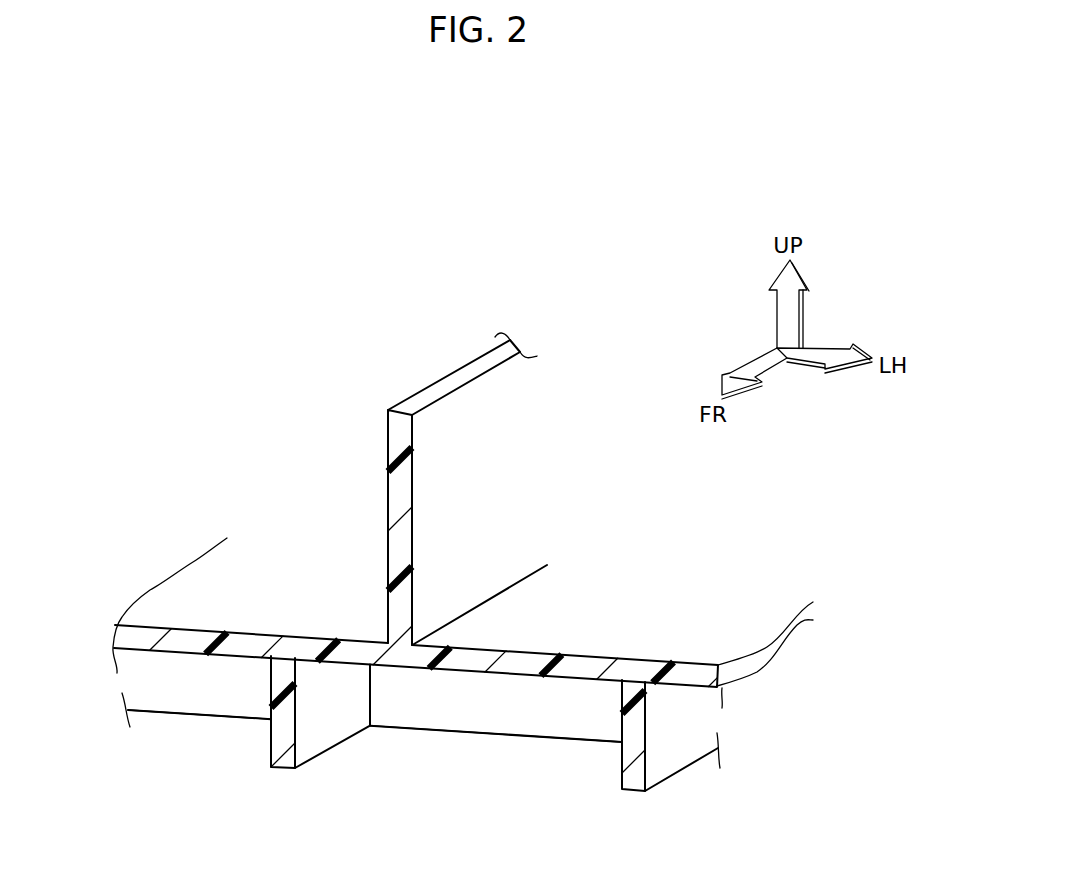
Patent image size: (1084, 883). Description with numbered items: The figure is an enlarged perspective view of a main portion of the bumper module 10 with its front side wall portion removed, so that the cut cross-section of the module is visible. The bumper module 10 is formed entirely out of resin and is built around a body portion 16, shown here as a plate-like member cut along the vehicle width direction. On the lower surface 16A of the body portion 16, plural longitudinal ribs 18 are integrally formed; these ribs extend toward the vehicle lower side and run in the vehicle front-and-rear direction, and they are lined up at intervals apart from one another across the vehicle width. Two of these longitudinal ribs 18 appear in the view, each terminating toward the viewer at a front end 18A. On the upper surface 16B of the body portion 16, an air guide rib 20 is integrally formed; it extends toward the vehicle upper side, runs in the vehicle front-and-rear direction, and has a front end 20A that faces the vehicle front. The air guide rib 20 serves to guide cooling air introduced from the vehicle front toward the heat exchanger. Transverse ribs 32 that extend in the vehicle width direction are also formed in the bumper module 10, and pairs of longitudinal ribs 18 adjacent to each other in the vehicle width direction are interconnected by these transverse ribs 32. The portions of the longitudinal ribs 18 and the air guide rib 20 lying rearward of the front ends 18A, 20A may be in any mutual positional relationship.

The bumper module 10 is at (447, 262).
The body portion 16 is at (208, 600).
The lower surface 16A is at (510, 673).
The upper surface 16B is at (557, 613).
The longitudinal rib 18 is at (320, 755).
The front end of longitudinal rib 18A is at (283, 768).
The air guide rib 20 is at (451, 373).
The front end of air guide rib 20A is at (400, 438).
The transverse rib 32 is at (188, 697).